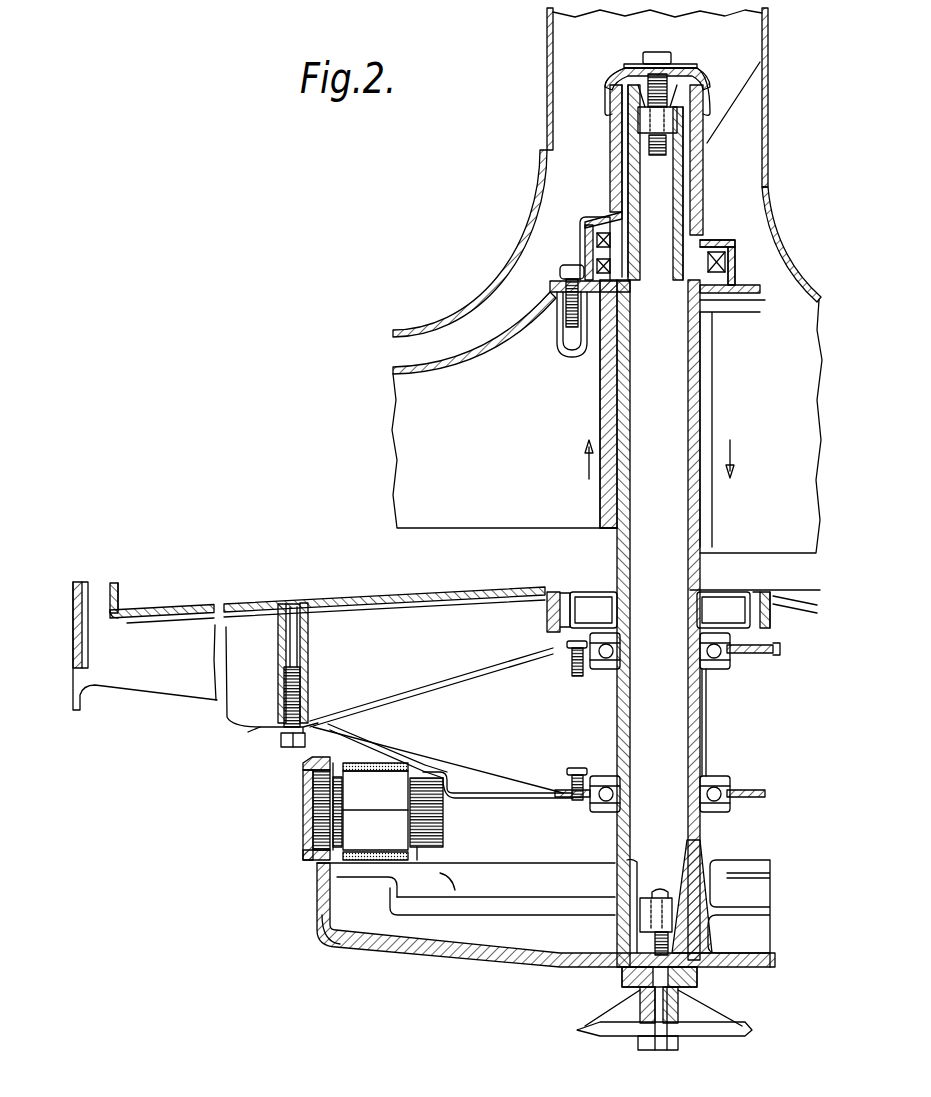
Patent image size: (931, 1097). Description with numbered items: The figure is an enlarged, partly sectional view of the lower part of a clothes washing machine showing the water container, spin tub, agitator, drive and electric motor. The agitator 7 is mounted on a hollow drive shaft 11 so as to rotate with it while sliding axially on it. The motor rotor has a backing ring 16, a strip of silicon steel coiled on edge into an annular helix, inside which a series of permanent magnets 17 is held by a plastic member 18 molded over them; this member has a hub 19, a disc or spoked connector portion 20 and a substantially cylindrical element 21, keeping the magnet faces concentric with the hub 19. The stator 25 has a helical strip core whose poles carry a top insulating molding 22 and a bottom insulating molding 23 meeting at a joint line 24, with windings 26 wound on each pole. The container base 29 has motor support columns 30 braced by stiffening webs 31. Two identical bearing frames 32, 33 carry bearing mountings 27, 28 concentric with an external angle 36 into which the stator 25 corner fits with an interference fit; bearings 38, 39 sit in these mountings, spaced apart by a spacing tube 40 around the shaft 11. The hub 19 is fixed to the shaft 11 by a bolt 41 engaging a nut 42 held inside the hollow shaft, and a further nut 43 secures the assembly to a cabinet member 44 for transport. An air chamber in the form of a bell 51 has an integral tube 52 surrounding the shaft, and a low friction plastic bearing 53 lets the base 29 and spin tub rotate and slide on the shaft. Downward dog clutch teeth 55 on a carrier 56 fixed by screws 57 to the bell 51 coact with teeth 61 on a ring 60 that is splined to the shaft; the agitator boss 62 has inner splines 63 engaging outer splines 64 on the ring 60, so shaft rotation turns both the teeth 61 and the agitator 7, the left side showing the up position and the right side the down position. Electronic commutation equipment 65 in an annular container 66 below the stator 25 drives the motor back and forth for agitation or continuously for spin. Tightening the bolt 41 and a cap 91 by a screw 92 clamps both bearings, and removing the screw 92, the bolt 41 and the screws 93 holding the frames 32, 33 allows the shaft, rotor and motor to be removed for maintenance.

The agitator 7 is at (547, 75).
The hollow drive shaft 11 is at (702, 731).
The backing ring 16 is at (313, 826).
The magnets 17 is at (308, 795).
The plastic member 18 is at (303, 778).
The hub 19 is at (615, 925).
The disc or spoked connector portion 20 is at (452, 965).
The substantially cylindrical element 21 is at (310, 850).
The top insulating molding 22 is at (343, 765).
The bottom insulating molding 23 is at (338, 868).
The joint line 24 is at (370, 805).
The stator 25 is at (445, 825).
The windings 26 is at (383, 868).
The bearing mounting 27 is at (596, 670).
The bearing mounting 28 is at (596, 780).
The base 29 is at (172, 622).
The motor support columns 30 is at (278, 675).
The stiffening webs 31 is at (190, 640).
The bearing frame 32 is at (500, 672).
The bearing frame 33 is at (408, 755).
The external angle 36 is at (445, 782).
The bearing 38 is at (720, 668).
The bearing 39 is at (740, 778).
The spacing tube 40 is at (706, 760).
The bolt 41 is at (697, 972).
The nut 42 is at (600, 965).
The further nut 43 is at (682, 1040).
The cabinet member 44 is at (600, 1032).
The bell 51 is at (487, 474).
The tube 52 is at (606, 502).
The low friction plastic bearing 53 is at (610, 420).
The dog clutch teeth 55 is at (585, 238).
The carrier 56 is at (590, 264).
The screws 57 is at (560, 272).
The ring 60 is at (716, 250).
The dog clutch teeth 61 is at (740, 265).
The boss 62 is at (614, 153).
The inner splines 63 is at (626, 188).
The outer splines 64 is at (699, 68).
The electronic commutation equipment 65 is at (330, 928).
The annular container 66 is at (440, 890).
The cap 91 is at (615, 75).
The screw 92 is at (648, 58).
The screws 93 is at (303, 677).